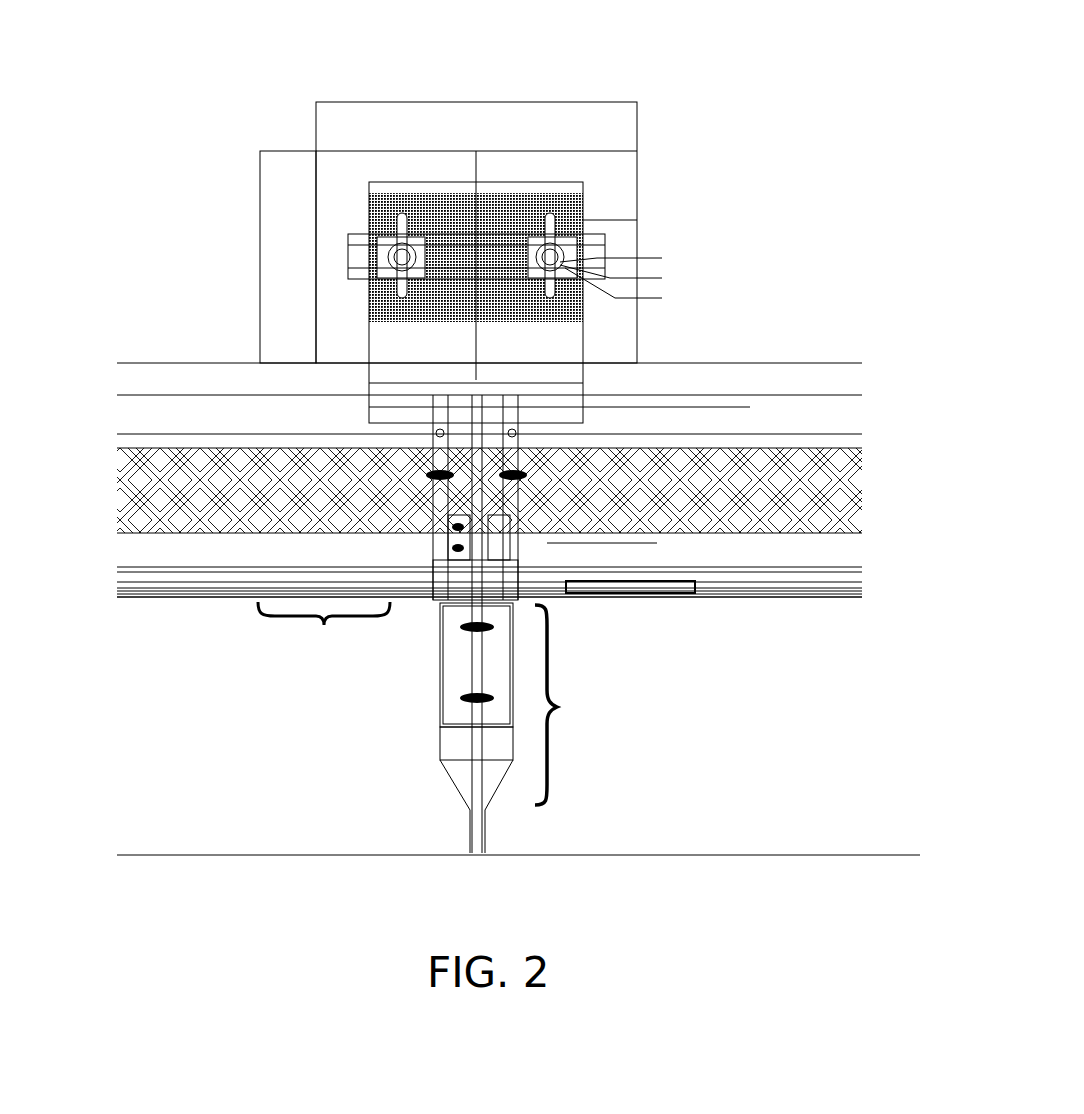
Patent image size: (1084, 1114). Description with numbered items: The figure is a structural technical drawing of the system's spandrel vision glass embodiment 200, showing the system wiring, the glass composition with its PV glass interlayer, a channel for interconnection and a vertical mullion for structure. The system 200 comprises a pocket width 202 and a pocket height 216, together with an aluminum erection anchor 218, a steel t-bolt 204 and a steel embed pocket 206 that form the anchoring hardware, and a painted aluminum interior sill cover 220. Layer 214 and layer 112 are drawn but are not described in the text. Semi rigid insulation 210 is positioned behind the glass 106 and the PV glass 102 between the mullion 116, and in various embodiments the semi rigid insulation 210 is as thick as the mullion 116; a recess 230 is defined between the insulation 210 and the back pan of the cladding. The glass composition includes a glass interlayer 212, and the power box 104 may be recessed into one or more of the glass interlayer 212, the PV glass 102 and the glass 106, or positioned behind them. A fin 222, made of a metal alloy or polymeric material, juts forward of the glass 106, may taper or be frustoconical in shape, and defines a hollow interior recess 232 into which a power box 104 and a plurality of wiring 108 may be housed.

The spandrel vision glass embodiment 200 is at (148, 66).
The pocket width 202 is at (475, 102).
The pocket height 216 is at (258, 253).
The aluminum erection anchor 218 is at (512, 204).
The steel t-bolt 204 is at (555, 262).
The steel embed pocket 206 is at (637, 315).
The painted aluminum interior sill cover 220 is at (698, 370).
The upper layer 214 is at (260, 450).
The semi rigid insulation 210 is at (722, 487).
The wiring 108 is at (407, 555).
The recess 230 is at (812, 545).
The PV glass 102 is at (143, 592).
The glass 106 is at (215, 597).
The substrate 112 is at (133, 737).
The glass interlayer 212 is at (567, 592).
The mullion 116 is at (543, 435).
The fin 222 is at (557, 707).
The hollow interior recess 232 is at (493, 753).
The power box 104 is at (325, 628).